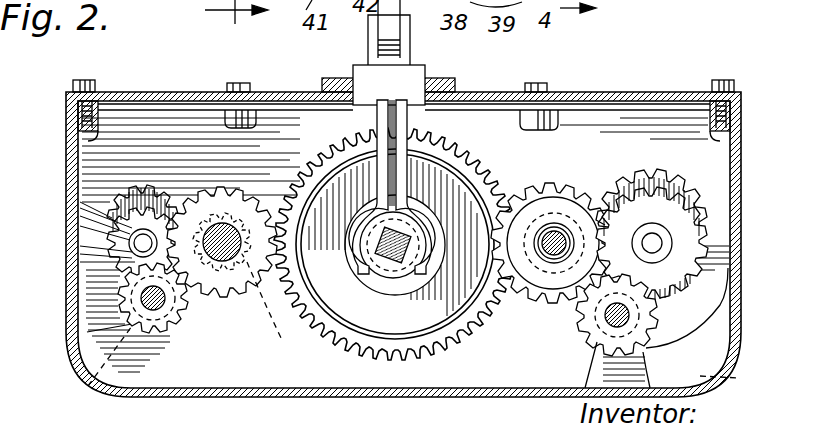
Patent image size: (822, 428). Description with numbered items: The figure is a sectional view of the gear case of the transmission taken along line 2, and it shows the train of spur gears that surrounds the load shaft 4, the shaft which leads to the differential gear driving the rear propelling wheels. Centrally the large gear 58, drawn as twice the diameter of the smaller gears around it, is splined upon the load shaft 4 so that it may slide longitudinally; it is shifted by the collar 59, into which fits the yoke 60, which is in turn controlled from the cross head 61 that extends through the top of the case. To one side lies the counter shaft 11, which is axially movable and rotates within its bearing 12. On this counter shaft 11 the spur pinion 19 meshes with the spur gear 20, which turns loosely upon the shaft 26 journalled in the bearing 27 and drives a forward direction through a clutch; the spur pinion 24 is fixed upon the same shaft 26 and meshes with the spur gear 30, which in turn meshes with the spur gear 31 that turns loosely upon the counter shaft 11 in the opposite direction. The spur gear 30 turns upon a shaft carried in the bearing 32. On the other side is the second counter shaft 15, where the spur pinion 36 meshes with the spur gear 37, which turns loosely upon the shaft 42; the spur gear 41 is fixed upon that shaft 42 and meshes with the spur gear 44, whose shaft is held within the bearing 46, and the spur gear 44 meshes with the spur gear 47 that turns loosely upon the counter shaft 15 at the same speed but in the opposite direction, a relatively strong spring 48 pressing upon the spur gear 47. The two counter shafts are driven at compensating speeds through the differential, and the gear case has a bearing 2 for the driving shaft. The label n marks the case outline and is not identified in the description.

The bearing 2 is at (236, 21).
The load shaft 4 is at (390, 258).
The counter shaft 11 is at (229, 235).
The bearing 12 is at (223, 262).
The counter shaft 15 is at (555, 258).
The spur pinion 19 is at (272, 312).
The spur gear 20 is at (108, 216).
The spur pinion 24 is at (144, 214).
The shaft 26 is at (138, 246).
The bearing 27 is at (134, 232).
The spur gear 30 is at (130, 330).
The spur gear 31 is at (223, 192).
The bearing 32 is at (94, 368).
The spur pinion 36 is at (606, 190).
The spur gear 37 is at (688, 200).
The spur gear 41 is at (730, 299).
The shaft 42 is at (655, 241).
The spur gear 44 is at (652, 330).
The bearing 46 is at (655, 368).
The spur gear 47 is at (578, 200).
The spring 48 is at (550, 262).
The gear 58 is at (427, 345).
The collar 59 is at (380, 270).
The yoke 60 is at (376, 228).
The cross head 61 is at (412, 88).
The housing n is at (238, 397).